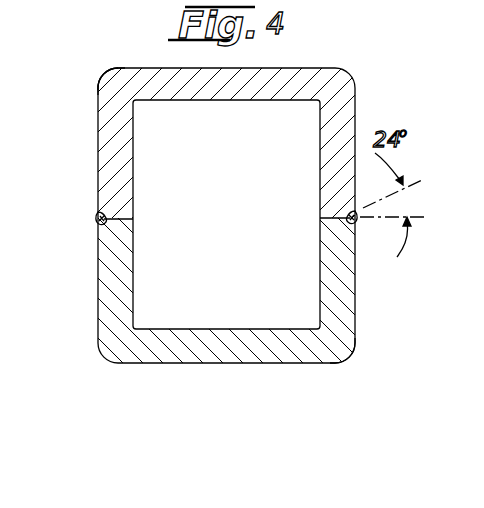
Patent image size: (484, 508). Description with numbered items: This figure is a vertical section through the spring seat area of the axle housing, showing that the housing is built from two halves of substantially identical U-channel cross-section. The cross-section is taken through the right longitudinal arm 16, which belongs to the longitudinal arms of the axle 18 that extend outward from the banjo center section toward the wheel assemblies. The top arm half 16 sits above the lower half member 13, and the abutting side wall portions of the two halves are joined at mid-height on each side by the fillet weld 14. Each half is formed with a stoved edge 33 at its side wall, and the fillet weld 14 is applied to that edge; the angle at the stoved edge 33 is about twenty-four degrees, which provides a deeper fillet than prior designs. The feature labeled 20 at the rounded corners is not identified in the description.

The lower half member 13 is at (110, 306).
The weld line 14 is at (98, 217).
The right longitudinal arm 16 is at (311, 68).
The longitudinal arm of the axle 18 is at (122, 68).
The rounded corner 20 is at (113, 88).
The stoved edge 33 is at (100, 212).